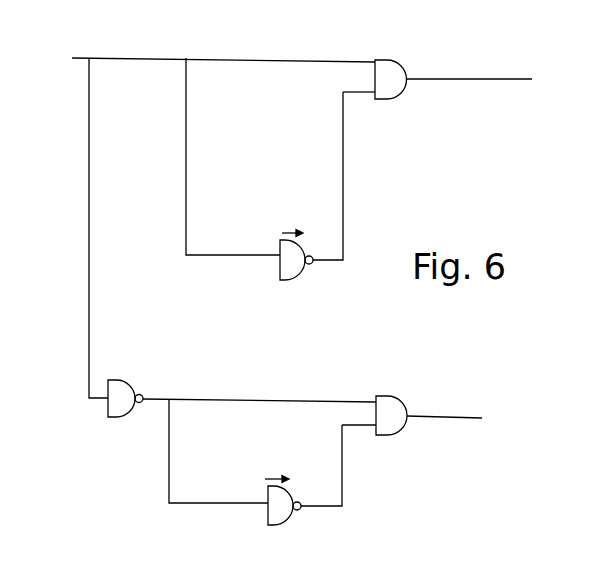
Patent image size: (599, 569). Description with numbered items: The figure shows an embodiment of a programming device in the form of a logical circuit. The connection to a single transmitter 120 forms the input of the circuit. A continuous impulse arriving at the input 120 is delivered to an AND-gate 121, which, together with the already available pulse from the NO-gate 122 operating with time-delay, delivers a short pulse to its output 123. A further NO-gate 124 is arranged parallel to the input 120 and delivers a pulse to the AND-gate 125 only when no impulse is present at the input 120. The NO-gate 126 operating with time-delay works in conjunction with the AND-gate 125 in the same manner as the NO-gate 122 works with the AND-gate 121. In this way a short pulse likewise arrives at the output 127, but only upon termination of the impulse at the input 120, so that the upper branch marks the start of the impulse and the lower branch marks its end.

The connection to a single transmitter 120 is at (206, 219).
The AND-gate 121 is at (390, 68).
The NO-gate operating with time-delay 122 is at (299, 272).
The output 123 is at (489, 80).
The NO-gate 124 is at (116, 413).
The AND-gate 125 is at (395, 428).
The NO-gate operating with time-delay 126 is at (286, 519).
The output 127 is at (465, 419).